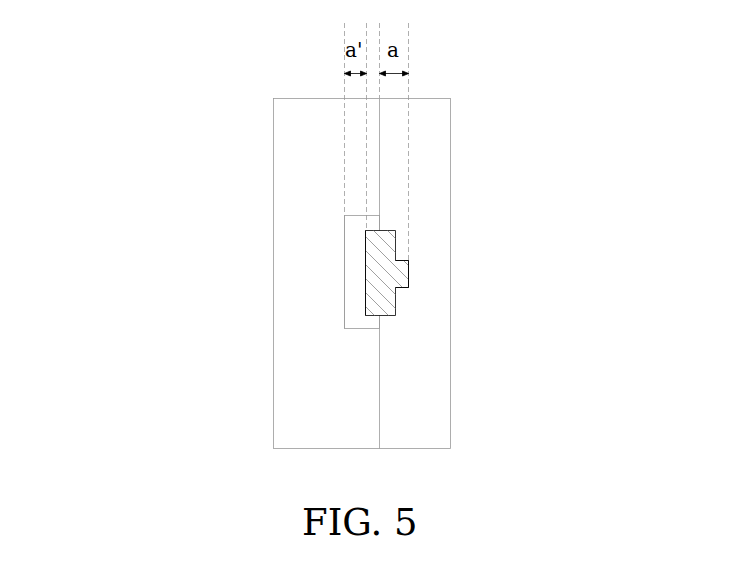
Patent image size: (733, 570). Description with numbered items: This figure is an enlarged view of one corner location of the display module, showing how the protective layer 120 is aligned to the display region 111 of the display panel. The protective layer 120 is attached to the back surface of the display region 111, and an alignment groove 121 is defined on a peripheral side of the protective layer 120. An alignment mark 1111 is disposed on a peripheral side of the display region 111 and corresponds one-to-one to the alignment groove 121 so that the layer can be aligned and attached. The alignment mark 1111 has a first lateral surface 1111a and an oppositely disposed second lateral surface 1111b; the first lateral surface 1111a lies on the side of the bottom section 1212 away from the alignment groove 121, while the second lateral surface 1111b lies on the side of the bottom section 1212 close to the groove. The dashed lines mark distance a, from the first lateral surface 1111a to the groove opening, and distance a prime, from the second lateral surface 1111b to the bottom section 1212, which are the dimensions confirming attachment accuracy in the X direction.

The protective layer 120 is at (273, 212).
The display region 111 is at (450, 208).
The alignment groove 121 is at (362, 328).
The bottom section 1212 is at (345, 303).
The alignment mark 1111 is at (395, 300).
The first lateral surface 1111a is at (408, 274).
The second lateral surface 1111b is at (365, 272).